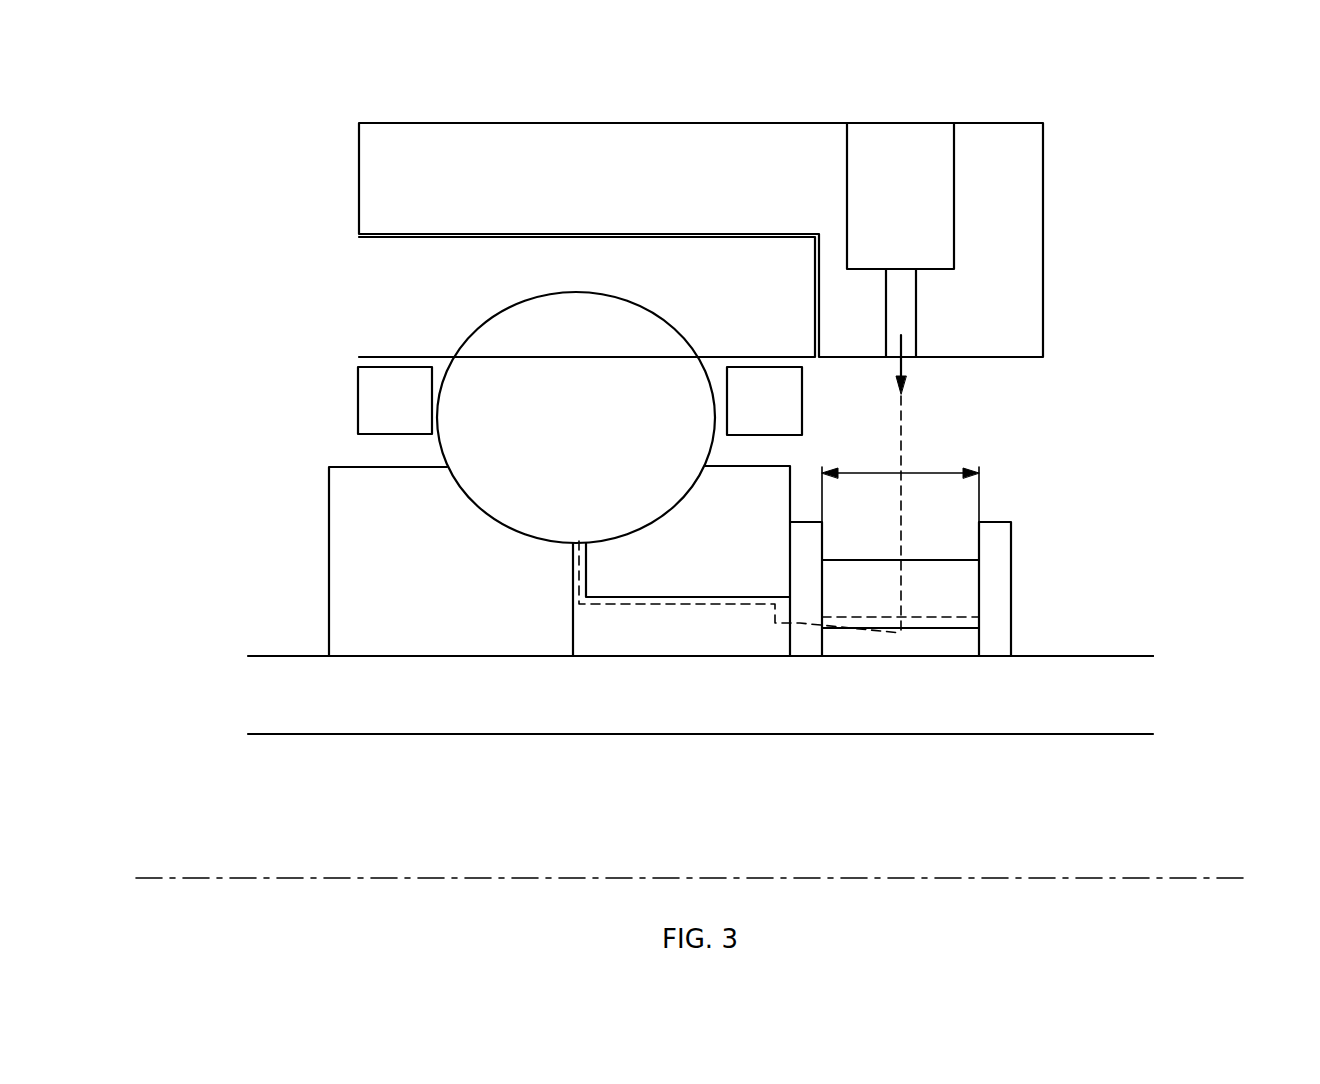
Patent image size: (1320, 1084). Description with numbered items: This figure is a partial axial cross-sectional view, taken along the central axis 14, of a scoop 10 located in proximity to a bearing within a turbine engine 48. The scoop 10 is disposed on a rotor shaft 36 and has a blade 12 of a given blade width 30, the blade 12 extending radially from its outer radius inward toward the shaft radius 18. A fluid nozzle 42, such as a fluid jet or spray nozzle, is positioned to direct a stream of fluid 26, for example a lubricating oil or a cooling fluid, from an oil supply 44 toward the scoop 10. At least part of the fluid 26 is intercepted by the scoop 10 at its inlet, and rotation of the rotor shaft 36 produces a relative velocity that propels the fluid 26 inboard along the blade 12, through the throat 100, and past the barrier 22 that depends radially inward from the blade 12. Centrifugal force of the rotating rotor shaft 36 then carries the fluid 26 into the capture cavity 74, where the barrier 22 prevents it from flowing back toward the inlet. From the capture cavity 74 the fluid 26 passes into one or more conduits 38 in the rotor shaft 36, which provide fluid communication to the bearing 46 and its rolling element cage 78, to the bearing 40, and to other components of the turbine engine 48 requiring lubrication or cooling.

The scoop 10 is at (1127, 435).
The blade 12 is at (924, 602).
The central axis 14 is at (405, 877).
The shaft radius 18 is at (1083, 658).
The barrier 22 is at (979, 628).
The fluid 26 is at (905, 372).
The blade width 30 is at (860, 468).
The rotor shaft 36 is at (552, 716).
The conduit 38 is at (678, 623).
The bearing 40 is at (561, 431).
The fluid nozzle 42 is at (916, 322).
The oil supply 44 is at (908, 148).
The bearing 46 is at (324, 237).
The turbine engine 48 is at (538, 186).
The capture cavity 74 is at (979, 617).
The rolling element cage 78 is at (380, 415).
The throat 100 is at (890, 645).